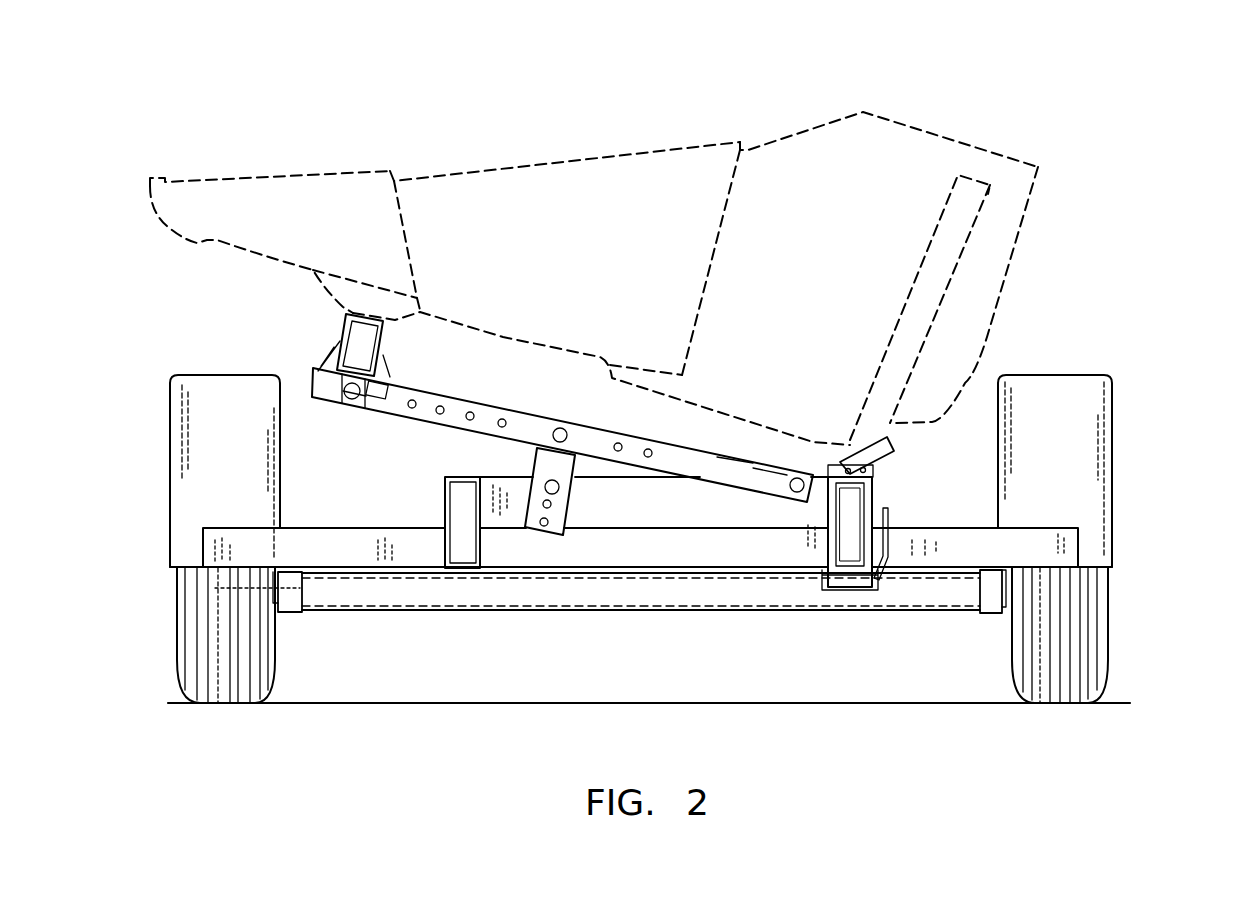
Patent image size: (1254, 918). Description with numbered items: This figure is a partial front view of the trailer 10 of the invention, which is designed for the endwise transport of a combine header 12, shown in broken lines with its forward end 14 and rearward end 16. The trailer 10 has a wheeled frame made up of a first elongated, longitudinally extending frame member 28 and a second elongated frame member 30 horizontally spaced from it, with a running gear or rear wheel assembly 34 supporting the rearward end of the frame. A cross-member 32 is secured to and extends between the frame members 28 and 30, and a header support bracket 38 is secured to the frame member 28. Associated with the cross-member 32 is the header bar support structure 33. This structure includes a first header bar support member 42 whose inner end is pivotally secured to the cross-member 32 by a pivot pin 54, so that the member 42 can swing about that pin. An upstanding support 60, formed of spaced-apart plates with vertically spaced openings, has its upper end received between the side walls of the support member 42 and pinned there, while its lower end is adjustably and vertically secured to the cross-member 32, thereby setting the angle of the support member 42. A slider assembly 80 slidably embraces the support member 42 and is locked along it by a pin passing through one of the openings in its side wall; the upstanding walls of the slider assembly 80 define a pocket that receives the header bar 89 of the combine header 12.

The trailer 10 is at (1120, 335).
The combine header 12 is at (972, 140).
The forward end 14 is at (122, 186).
The rearward end 16 is at (1033, 210).
The first frame member 28 is at (850, 543).
The second frame member 30 is at (465, 552).
The cross-member 32 is at (672, 515).
The header bar support structure 33 is at (695, 438).
The rear wheel assembly 34 is at (1115, 457).
The header support bracket 38 is at (872, 497).
The first header bar support member 42 is at (437, 423).
The pivot pin 54 is at (788, 500).
The upstanding support 60 is at (528, 463).
The slider assembly 80 is at (375, 410).
The header bar 89 is at (367, 345).